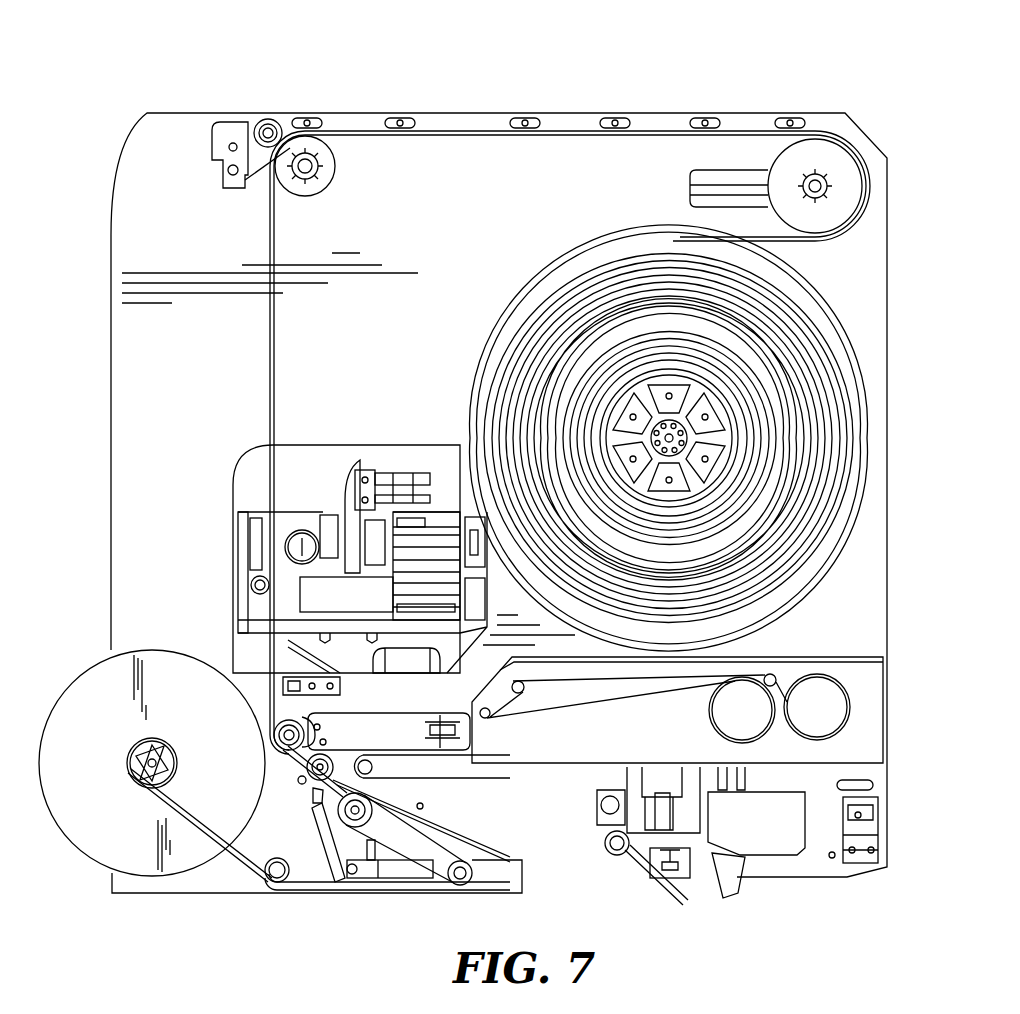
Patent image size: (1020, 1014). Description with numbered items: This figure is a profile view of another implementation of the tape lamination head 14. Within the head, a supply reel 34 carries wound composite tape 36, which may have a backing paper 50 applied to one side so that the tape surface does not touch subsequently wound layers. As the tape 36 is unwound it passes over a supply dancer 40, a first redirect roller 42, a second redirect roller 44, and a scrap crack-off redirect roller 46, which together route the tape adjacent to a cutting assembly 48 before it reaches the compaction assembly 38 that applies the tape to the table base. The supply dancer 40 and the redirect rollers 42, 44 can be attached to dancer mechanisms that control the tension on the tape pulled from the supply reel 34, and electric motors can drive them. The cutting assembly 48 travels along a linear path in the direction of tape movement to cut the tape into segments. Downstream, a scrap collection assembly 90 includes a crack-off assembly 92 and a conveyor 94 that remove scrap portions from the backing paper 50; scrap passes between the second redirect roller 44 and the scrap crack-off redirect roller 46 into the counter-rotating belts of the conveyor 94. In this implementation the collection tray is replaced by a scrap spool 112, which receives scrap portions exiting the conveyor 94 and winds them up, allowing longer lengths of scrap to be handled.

The tape lamination head 14 is at (783, 80).
The supply reel 34 is at (860, 340).
The composite tape 36 is at (785, 302).
The compaction assembly 38 is at (750, 905).
The supply dancer 40 is at (703, 178).
The first redirect roller 42 is at (322, 155).
The second redirect roller 44 is at (272, 727).
The scrap crack-off redirect roller 46 is at (323, 756).
The cutting assembly 48 is at (322, 484).
The backing paper 50 is at (82, 825).
The scrap collection assembly 90 is at (762, 652).
The crack-off assembly 92 is at (298, 794).
The conveyor 94 is at (345, 712).
The scrap spool 112 is at (690, 710).